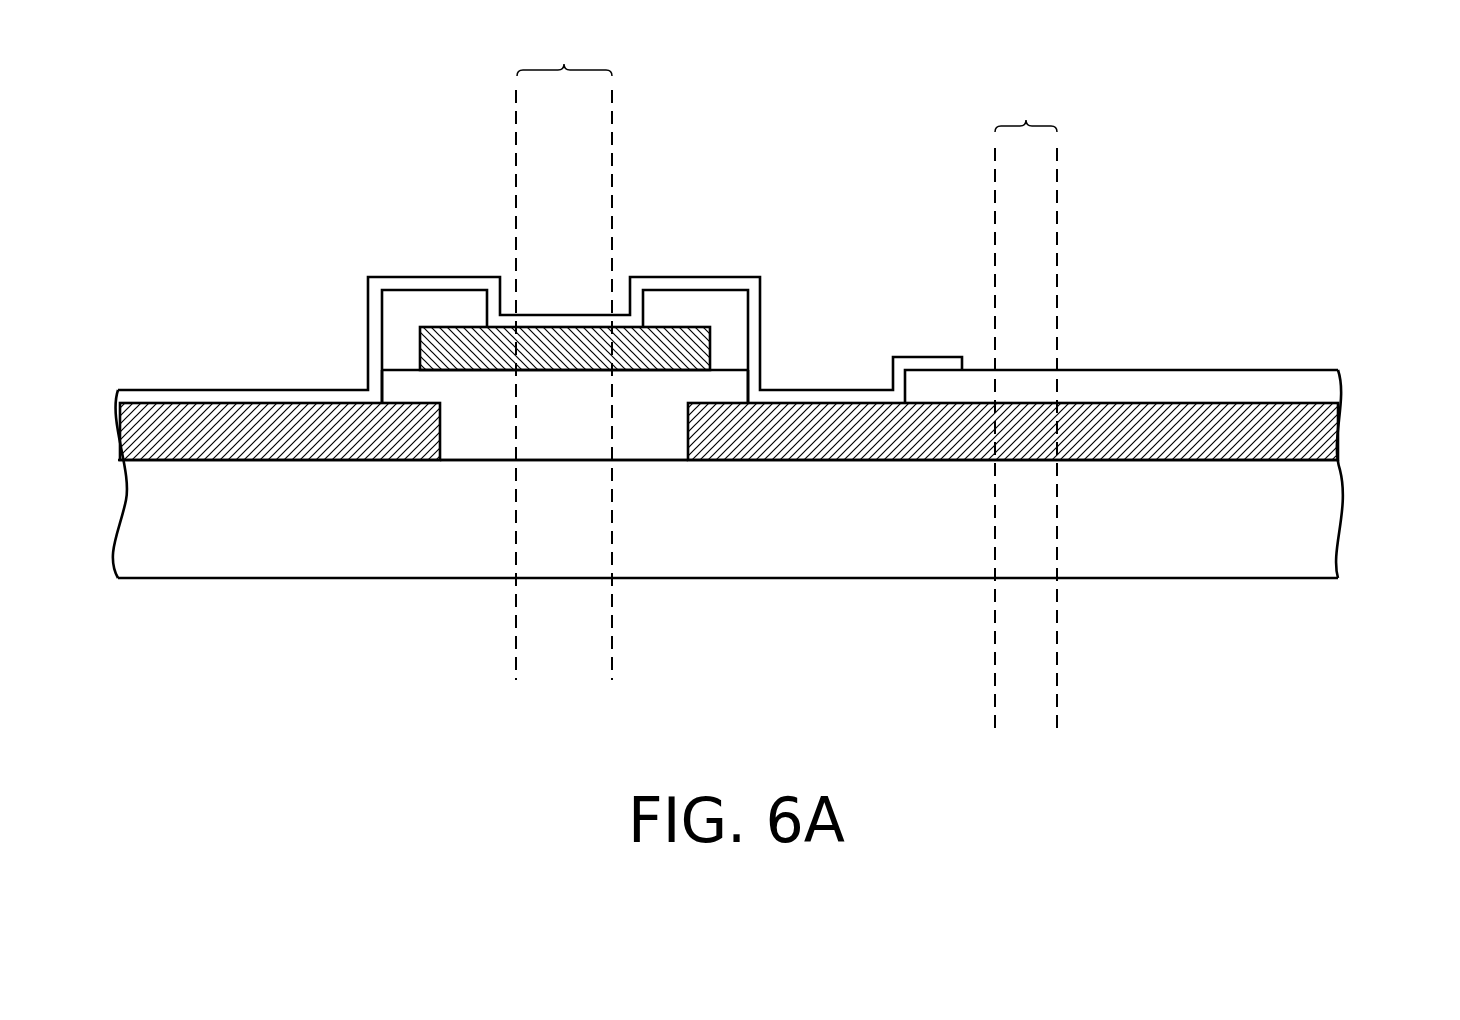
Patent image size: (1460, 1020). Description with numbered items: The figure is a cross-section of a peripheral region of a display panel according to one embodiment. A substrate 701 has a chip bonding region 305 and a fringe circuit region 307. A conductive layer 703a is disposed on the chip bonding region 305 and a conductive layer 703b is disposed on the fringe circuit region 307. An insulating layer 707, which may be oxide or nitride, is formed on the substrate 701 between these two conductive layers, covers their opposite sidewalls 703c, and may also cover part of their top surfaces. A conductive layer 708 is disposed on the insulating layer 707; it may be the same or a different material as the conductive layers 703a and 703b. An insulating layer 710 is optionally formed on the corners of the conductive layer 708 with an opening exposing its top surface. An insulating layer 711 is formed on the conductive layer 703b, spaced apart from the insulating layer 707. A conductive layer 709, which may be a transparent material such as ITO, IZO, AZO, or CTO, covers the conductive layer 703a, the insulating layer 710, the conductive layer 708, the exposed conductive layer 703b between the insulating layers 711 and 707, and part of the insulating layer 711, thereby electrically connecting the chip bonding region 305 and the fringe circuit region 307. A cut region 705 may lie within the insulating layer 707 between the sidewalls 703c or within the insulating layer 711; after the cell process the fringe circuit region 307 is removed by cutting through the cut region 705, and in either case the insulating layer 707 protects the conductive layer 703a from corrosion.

The chip bonding region 305 is at (254, 298).
The fringe circuit region 307 is at (1288, 298).
The substrate 701 is at (1187, 552).
The conductive layer 703a is at (280, 445).
The conductive layer 703b is at (827, 443).
The opposite sidewalls 703c is at (440, 440).
The cut region 705 is at (786, 377).
The insulating layer 707 is at (722, 390).
The conductive layer 708 is at (553, 353).
The conductive layer 709 is at (695, 283).
The insulating layer 710 is at (420, 312).
The insulating layer 711 is at (1085, 390).